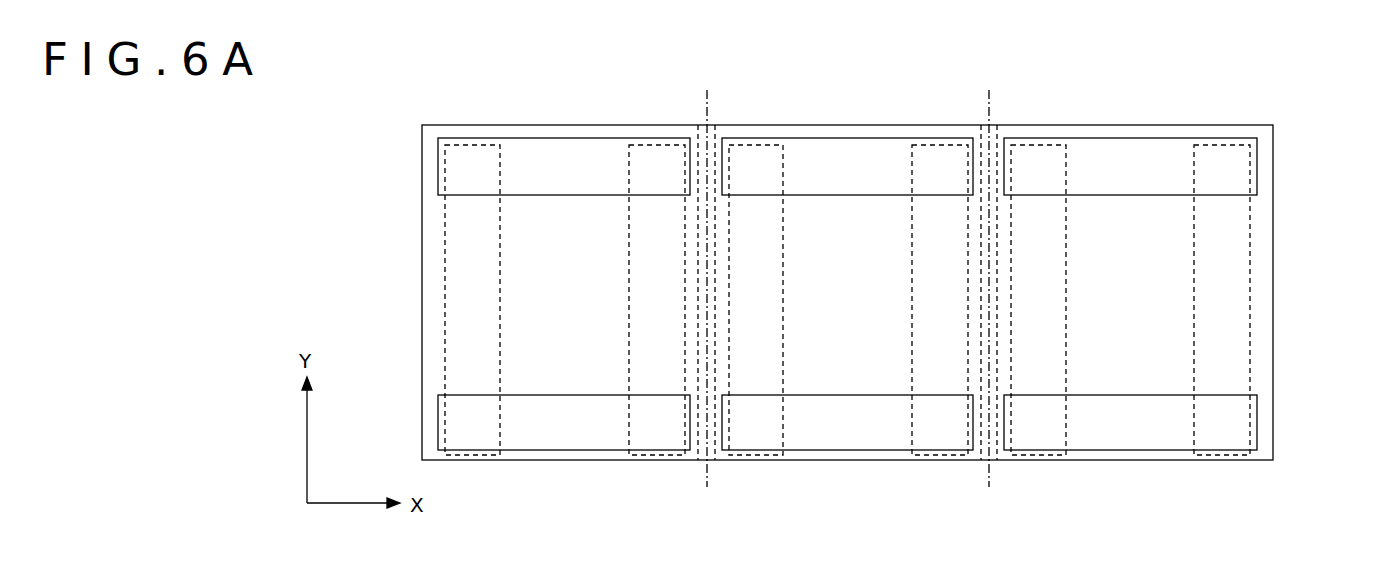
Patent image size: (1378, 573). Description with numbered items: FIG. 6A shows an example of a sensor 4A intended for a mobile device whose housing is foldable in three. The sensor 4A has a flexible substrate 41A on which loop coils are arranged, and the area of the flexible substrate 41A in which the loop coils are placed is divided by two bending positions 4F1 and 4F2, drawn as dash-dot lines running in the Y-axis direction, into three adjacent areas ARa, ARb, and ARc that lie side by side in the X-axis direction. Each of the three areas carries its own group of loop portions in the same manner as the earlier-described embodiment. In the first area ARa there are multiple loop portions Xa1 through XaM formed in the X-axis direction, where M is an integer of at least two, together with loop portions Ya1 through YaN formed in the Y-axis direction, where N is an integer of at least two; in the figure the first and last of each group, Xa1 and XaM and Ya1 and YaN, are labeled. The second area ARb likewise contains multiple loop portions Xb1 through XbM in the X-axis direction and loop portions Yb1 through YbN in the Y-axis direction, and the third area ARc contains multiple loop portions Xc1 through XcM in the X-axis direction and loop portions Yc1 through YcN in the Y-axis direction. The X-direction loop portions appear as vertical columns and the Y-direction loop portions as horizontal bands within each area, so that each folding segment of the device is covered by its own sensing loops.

The sensor 4A is at (1275, 218).
The flexible substrate 41A is at (849, 313).
The area ARa is at (518, 297).
The area ARb is at (847, 313).
The area ARc is at (1173, 295).
The bending position 4F1 is at (707, 492).
The bending position 4F2 is at (989, 492).
The loop portion Ya1 is at (459, 138).
The loop portion YaN is at (445, 414).
The loop portion Xa1 is at (500, 358).
The loop portion XaM is at (629, 352).
The loop portion Yb1 is at (808, 137).
The loop portion YbN is at (840, 450).
The loop portion Xb1 is at (783, 348).
The loop portion XbM is at (912, 352).
The loop portion Yc1 is at (1075, 137).
The loop portion YcN is at (1153, 450).
The loop portion Xc1 is at (1066, 348).
The loop portion XcM is at (1252, 258).